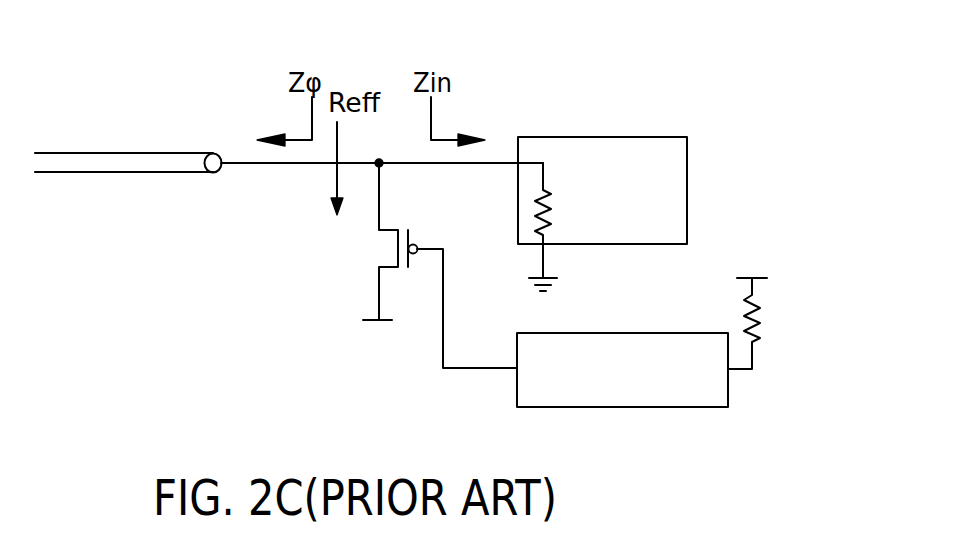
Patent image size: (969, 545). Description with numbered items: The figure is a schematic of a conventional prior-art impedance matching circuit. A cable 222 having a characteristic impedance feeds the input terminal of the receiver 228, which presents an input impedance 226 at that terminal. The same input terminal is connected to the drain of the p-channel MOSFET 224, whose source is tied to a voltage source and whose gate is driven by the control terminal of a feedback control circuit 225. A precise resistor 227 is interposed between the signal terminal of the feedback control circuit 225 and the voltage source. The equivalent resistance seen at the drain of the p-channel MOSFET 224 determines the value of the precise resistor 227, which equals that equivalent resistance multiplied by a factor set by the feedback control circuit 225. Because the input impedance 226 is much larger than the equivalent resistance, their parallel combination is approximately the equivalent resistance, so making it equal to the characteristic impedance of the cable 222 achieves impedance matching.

The cable 222 is at (102, 153).
The PMOS 224 is at (398, 257).
The feedback control circuit 225 is at (678, 333).
The input impedance 226 is at (538, 193).
The precise resistor 227 is at (755, 340).
The receiver 228 is at (580, 137).